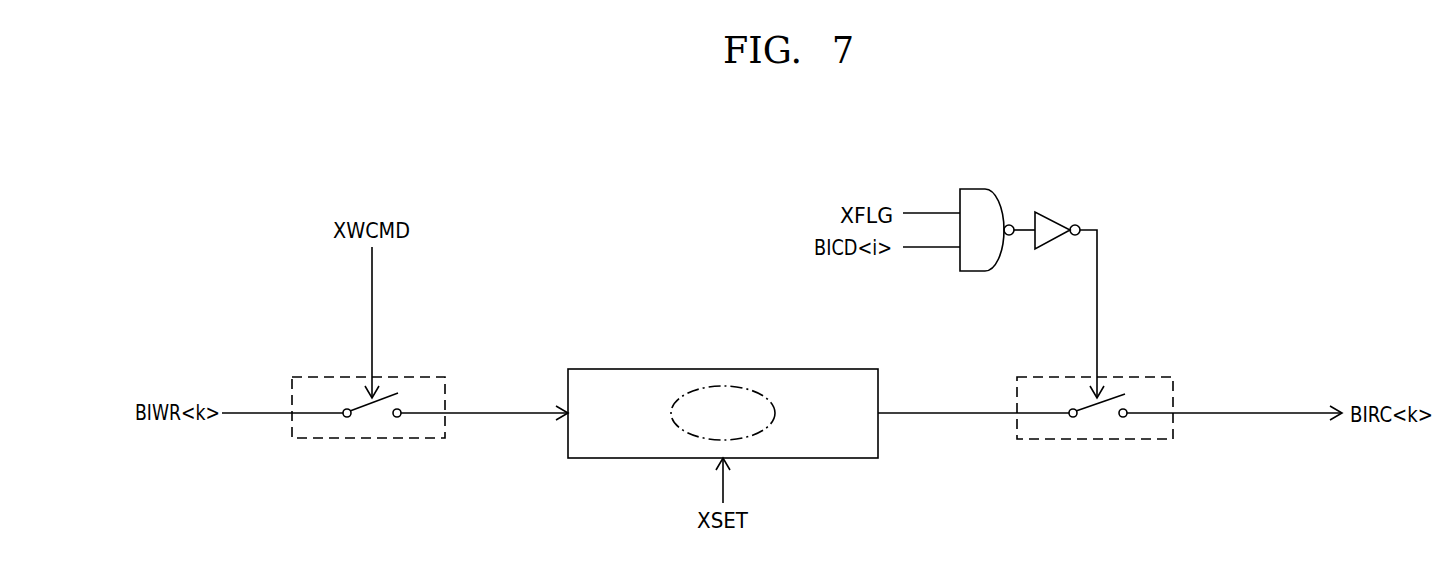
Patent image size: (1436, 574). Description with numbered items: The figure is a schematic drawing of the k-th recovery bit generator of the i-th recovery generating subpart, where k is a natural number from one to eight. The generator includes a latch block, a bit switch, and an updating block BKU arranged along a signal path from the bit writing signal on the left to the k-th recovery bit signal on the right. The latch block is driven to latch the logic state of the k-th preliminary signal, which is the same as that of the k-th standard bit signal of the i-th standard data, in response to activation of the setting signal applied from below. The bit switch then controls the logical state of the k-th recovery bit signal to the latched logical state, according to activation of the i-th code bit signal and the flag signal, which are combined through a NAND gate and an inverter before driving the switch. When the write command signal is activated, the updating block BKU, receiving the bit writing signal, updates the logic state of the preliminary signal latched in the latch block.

The updating block BKU is at (407, 375).